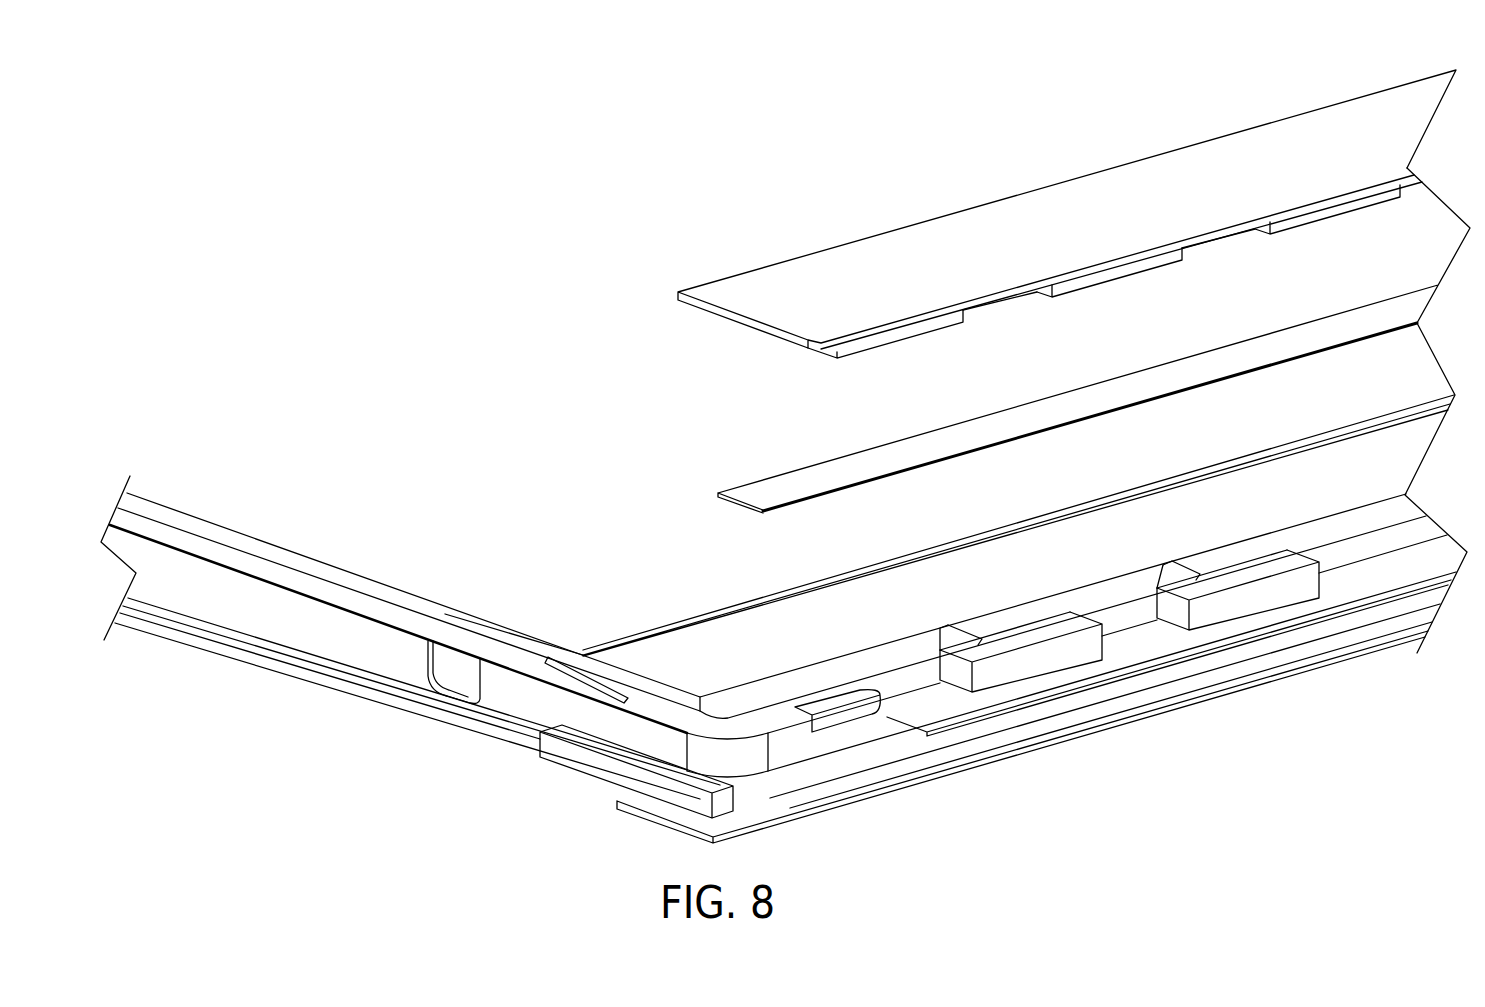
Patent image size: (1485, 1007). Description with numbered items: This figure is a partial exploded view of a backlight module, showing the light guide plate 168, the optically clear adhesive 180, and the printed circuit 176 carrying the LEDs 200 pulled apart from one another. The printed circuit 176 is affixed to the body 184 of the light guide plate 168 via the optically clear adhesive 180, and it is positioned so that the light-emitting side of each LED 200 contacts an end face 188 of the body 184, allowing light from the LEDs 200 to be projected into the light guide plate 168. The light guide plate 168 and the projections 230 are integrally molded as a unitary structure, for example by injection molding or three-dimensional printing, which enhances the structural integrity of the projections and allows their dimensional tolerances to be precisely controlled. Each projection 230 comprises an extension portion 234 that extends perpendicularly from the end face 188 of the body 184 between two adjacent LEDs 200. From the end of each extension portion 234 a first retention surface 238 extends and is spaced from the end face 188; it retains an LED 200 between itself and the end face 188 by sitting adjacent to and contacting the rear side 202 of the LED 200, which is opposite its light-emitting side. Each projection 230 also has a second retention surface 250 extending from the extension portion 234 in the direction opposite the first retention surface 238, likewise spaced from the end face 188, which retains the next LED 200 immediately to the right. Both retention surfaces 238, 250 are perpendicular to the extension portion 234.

The light guide plate 168 is at (604, 688).
The printed circuit 176 is at (867, 262).
The optically clear adhesive 180 is at (762, 490).
The body 184 is at (673, 668).
The end face 188 is at (838, 681).
The LED 200 is at (918, 337).
The rear side 202 is at (857, 350).
The projection 230 is at (1035, 662).
The extension portion 234 is at (960, 637).
The first retention surface 238 is at (913, 670).
The second retention surface 250 is at (1027, 623).